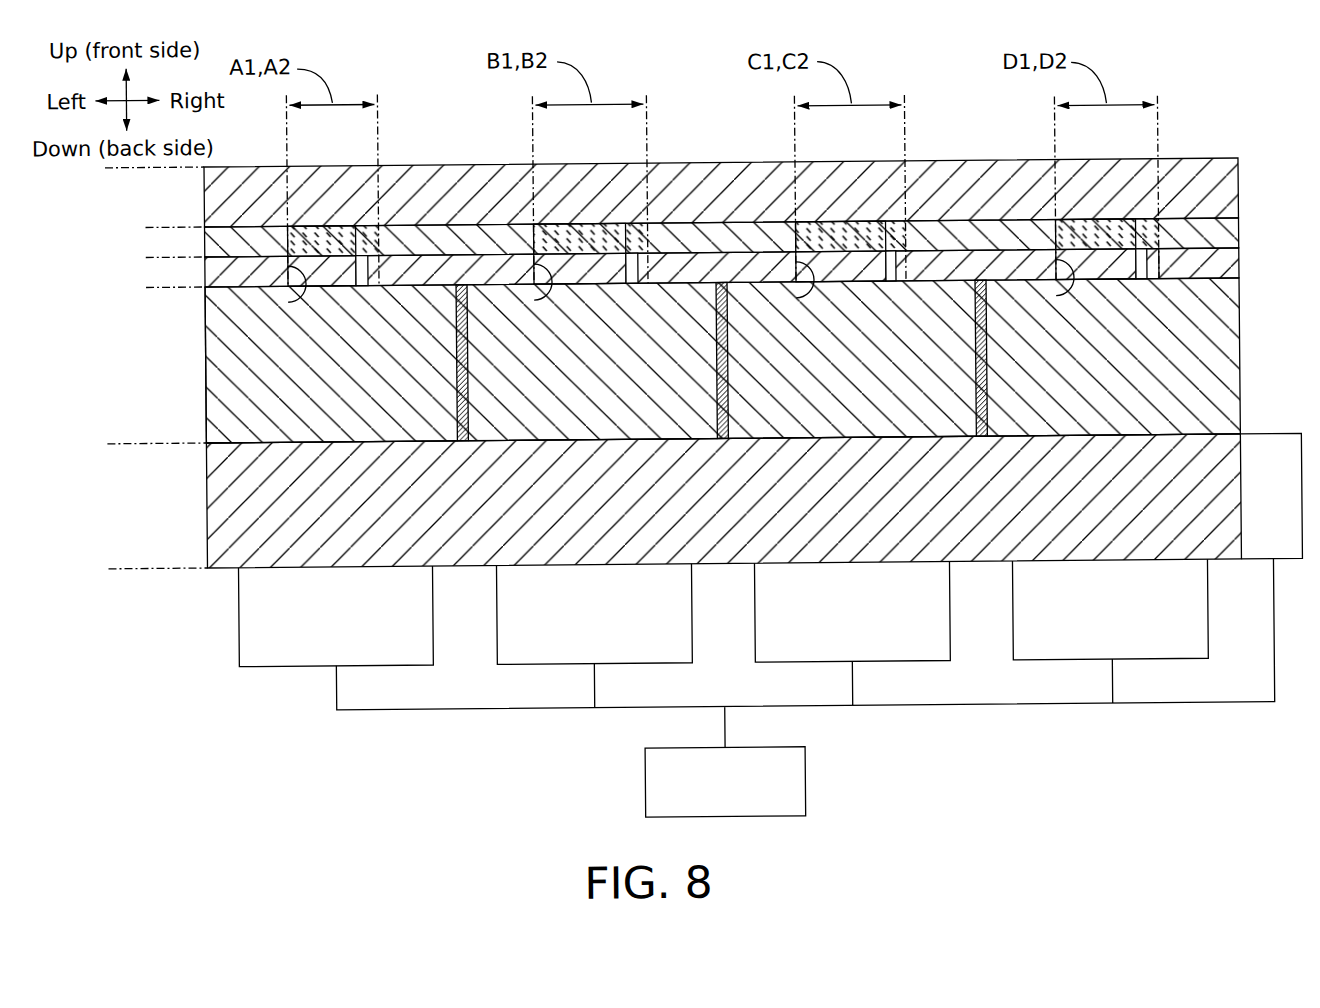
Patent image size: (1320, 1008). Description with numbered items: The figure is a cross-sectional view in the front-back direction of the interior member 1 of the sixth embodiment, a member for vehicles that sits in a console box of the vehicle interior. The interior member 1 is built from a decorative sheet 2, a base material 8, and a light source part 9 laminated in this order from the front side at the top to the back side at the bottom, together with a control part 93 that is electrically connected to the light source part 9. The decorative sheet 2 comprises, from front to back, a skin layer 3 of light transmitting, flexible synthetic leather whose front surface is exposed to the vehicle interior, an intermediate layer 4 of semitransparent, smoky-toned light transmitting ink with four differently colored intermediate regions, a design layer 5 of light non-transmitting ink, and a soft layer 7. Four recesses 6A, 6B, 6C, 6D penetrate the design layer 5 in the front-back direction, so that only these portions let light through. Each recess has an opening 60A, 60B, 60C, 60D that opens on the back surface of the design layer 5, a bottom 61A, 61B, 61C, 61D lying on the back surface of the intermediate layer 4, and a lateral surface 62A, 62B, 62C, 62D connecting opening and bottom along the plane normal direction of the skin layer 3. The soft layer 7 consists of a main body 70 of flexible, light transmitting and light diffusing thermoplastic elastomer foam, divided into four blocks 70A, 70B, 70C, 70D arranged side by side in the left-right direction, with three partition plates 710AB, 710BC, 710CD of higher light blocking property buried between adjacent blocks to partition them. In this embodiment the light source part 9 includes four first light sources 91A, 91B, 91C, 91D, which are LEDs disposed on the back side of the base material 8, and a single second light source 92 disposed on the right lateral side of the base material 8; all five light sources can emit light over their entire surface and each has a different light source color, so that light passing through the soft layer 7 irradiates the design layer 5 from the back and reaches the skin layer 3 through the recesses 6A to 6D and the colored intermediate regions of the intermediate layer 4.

The interior member 1 is at (1176, 74).
The decorative sheet 2 is at (110, 443).
The skin layer 3 is at (151, 167).
The intermediate layer 4 is at (151, 227).
The design layer 5 is at (151, 287).
The recess 6A is at (332, 268).
The recess 6B is at (543, 265).
The recess 6C is at (803, 265).
The recess 6D is at (1062, 265).
The soft layer 7 is at (151, 443).
The base material 8 is at (110, 568).
The light source part 9 is at (202, 672).
The opening 60A is at (355, 290).
The opening 60B is at (625, 290).
The opening 60C is at (886, 290).
The opening 60D is at (1136, 290).
The bottom 61A is at (370, 290).
The bottom 61B is at (638, 290).
The bottom 61C is at (895, 290).
The bottom 61D is at (1150, 290).
The lateral surface 62A is at (303, 292).
The lateral surface 62B is at (548, 290).
The lateral surface 62C is at (808, 290).
The lateral surface 62D is at (1065, 290).
The main body 70 is at (205, 343).
The block 70A is at (242, 440).
The block 70B is at (507, 440).
The block 70C is at (765, 440).
The block 70D is at (1022, 440).
The partition plate 710AB is at (462, 287).
The partition plate 710BC is at (721, 287).
The partition plate 710CD is at (980, 287).
The first light source 91A is at (292, 662).
The first light source 91B is at (549, 664).
The first light source 91C is at (807, 666).
The first light source 91D is at (1065, 668).
The second light source 92 is at (1266, 451).
The control part 93 is at (800, 762).